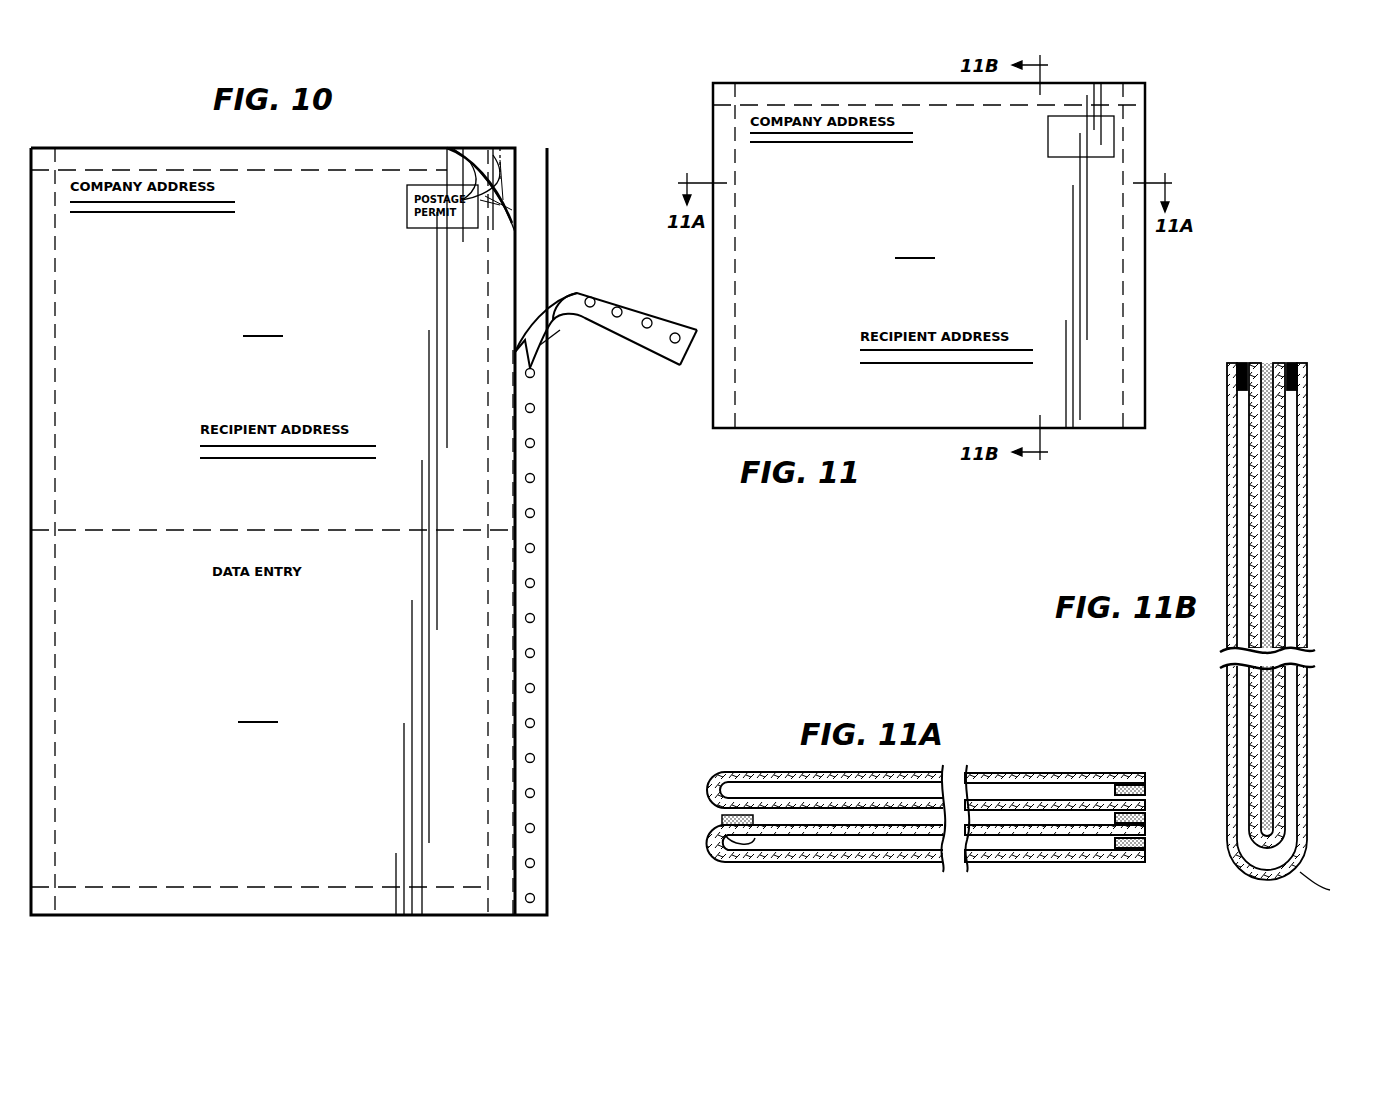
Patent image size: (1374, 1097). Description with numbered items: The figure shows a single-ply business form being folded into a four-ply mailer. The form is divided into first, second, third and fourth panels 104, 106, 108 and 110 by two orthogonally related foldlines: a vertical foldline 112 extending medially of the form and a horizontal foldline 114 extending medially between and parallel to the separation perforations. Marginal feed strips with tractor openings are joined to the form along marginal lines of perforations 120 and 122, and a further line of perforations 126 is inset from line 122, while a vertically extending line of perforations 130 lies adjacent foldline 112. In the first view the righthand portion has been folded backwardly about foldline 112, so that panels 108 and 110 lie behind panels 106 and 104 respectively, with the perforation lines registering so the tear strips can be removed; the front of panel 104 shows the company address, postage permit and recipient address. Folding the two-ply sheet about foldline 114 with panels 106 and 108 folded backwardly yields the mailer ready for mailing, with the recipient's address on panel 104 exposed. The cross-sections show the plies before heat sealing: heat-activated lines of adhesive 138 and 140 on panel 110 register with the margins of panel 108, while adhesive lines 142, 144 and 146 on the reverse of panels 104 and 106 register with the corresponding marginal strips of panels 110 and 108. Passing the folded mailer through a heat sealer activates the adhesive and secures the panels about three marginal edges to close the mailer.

In FIG. 10, the first panel 104 is at (263, 323).
In FIG. 11, the first panel 104 is at (915, 245).
In FIG. 11A, the first panel 104 is at (870, 860).
In FIG. 11B, the first panel 104 is at (1230, 542).
In FIG. 10, the second panel 106 is at (258, 709).
In FIG. 11A, the second panel 106 is at (727, 775).
In FIG. 11B, the second panel 106 is at (1310, 405).
In FIG. 11A, the third panel 108 is at (828, 808).
In FIG. 11B, the third panel 108 is at (1280, 492).
In FIG. 10, the fourth panel 110 is at (497, 175).
In FIG. 11A, the fourth panel 110 is at (715, 828).
In FIG. 11B, the fourth panel 110 is at (1250, 462).
In FIG. 11A, the foldline 112 is at (708, 785).
In FIG. 10, the foldline 114 is at (98, 533).
In FIG. 11B, the foldline 114 is at (1329, 887).
In FIG. 10, the marginal line of perforations 120 is at (23, 380).
In FIG. 10, the marginal line of perforations 122 is at (512, 382).
In FIG. 10, the line of perforations 126 is at (487, 320).
In FIG. 10, the line of perforations 130 is at (55, 310).
In FIG. 11B, the line of adhesive 138 is at (1267, 363).
In FIG. 11A, the line of adhesive 140 is at (1147, 818).
In FIG. 11B, the line of adhesive 142 is at (1240, 362).
In FIG. 11A, the line of adhesive 144 is at (1147, 790).
In FIG. 11B, the line of adhesive 146 is at (1292, 363).